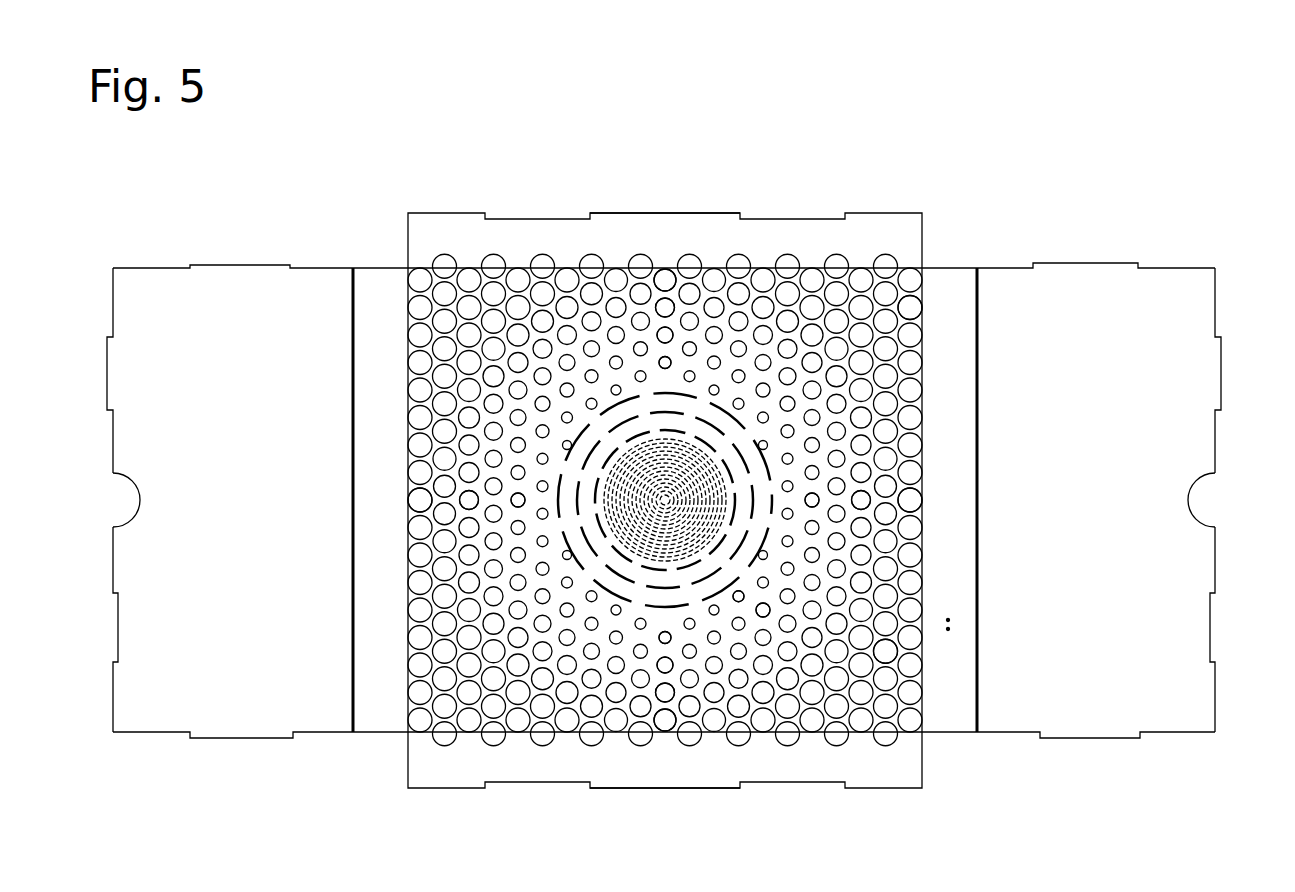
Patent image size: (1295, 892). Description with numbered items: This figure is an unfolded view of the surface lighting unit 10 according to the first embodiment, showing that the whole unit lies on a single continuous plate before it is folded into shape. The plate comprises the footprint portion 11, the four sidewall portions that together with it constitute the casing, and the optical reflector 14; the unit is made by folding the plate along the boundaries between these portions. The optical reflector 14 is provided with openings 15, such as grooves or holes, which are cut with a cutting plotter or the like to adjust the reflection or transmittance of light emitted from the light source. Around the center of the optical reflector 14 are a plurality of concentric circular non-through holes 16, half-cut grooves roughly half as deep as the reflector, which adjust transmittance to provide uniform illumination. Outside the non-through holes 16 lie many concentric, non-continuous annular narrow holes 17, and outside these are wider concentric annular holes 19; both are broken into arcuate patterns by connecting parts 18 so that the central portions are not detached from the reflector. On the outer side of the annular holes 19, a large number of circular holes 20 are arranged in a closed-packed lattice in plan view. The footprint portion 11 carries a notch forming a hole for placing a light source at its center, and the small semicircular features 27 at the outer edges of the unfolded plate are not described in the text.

The surface lighting unit 10 is at (1257, 151).
The footprint portion 11 is at (187, 286).
The optical reflector 14 is at (903, 324).
The openings 15 is at (754, 500).
The non-through holes 16 is at (677, 497).
The narrow holes 17 is at (713, 507).
The connecting parts 18 is at (693, 450).
The annular holes 19 is at (767, 547).
The circular holes 20 is at (985, 540).
The recess 27 is at (128, 500).